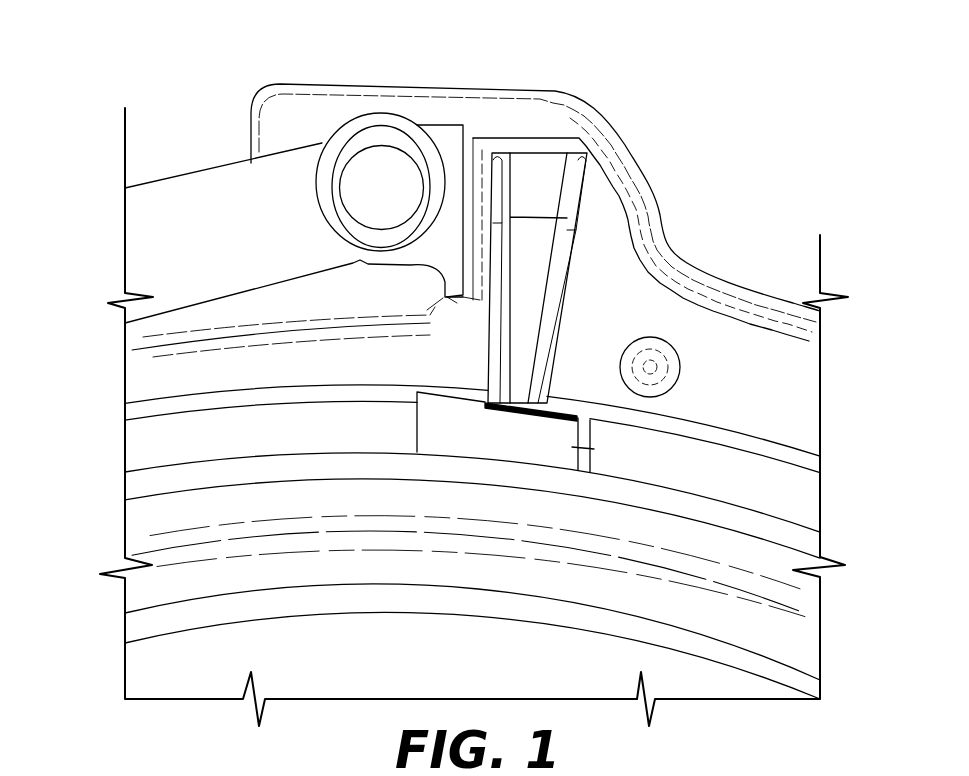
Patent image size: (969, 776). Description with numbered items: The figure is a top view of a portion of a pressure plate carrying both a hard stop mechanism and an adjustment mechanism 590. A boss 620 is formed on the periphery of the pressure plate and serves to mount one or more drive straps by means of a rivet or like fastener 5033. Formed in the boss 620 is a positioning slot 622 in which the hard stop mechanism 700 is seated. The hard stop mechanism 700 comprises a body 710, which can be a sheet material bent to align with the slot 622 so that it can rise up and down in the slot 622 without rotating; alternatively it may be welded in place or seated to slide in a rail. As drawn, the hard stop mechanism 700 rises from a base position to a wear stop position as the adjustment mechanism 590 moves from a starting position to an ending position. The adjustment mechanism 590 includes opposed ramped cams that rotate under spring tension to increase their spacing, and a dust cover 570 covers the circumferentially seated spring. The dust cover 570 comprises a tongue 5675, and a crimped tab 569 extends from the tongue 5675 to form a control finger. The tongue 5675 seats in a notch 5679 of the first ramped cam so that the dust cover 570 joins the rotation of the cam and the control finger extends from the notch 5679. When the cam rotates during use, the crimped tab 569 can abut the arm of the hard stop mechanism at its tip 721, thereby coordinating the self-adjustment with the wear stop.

The crimped tab 569 is at (478, 375).
The boss 620 is at (425, 90).
The positioning slot 622 is at (537, 152).
The hard stop mechanism 700 is at (536, 192).
The body 710 is at (570, 212).
The rivet or like fastener 5033 is at (328, 193).
The tip 721 is at (546, 390).
The notch 5679 is at (410, 425).
The adjustment mechanism 590 is at (124, 455).
The tongue 5675 is at (587, 447).
The dust cover 570 is at (808, 550).